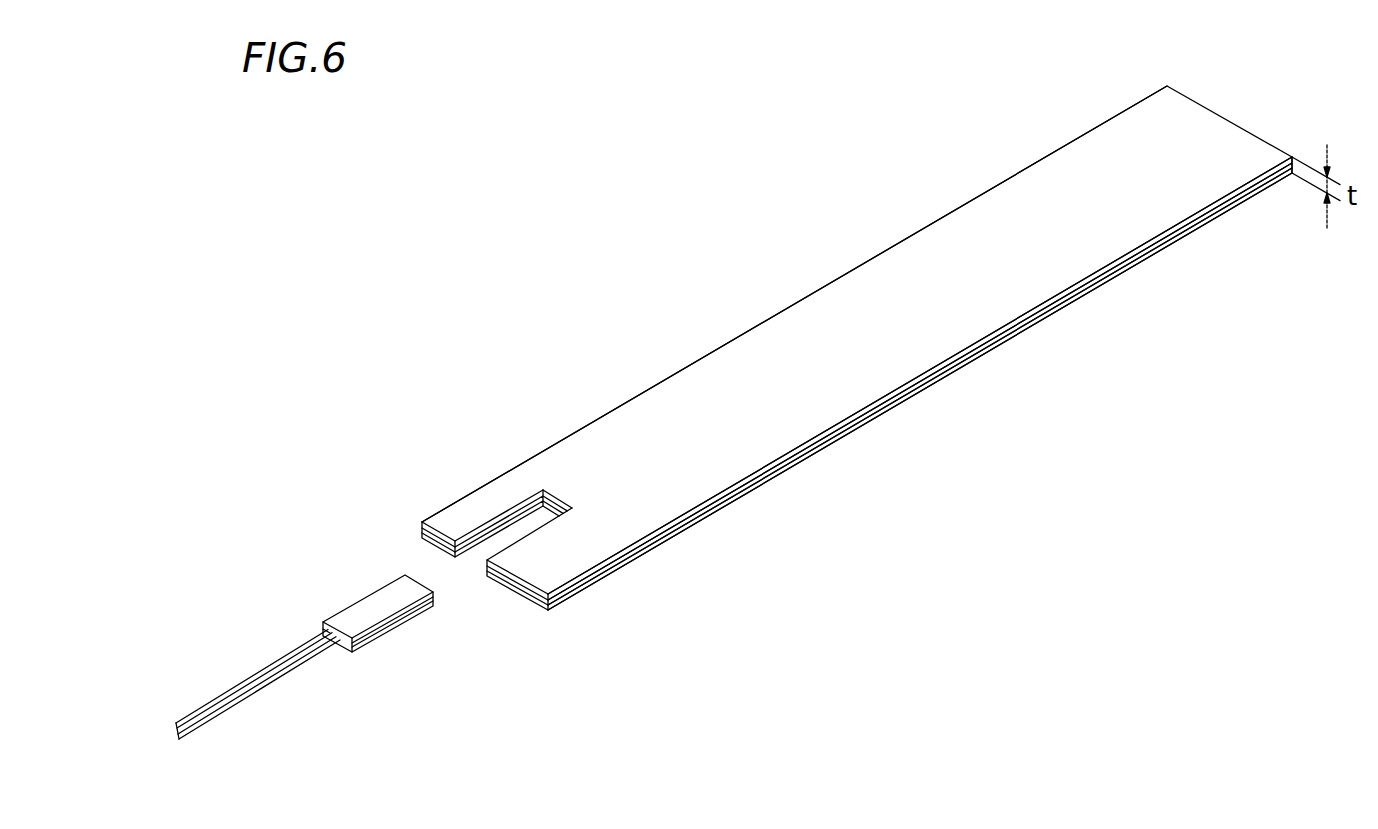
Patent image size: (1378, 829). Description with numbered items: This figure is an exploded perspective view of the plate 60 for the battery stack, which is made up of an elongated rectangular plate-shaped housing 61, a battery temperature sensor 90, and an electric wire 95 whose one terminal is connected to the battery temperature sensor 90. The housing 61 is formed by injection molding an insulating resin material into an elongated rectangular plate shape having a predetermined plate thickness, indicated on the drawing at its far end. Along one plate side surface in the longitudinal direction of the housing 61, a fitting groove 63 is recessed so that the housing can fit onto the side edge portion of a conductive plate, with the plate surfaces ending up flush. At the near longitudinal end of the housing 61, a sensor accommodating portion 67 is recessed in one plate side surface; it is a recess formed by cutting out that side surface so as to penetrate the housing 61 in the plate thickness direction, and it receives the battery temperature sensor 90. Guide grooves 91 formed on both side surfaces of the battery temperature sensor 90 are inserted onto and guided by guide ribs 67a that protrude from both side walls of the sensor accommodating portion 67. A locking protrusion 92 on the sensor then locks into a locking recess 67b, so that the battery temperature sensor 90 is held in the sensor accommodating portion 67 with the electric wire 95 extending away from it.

The plate for the battery stack 60 is at (578, 288).
The housing 61 is at (710, 347).
The fitting groove 63 is at (612, 565).
The sensor accommodating portion 67 is at (516, 533).
The guide ribs 67a is at (533, 518).
The locking recess 67b is at (475, 552).
The battery temperature sensor 90 is at (370, 605).
The guide grooves 91 is at (405, 628).
The locking protrusion 92 is at (363, 657).
The electric wire 95 is at (263, 670).